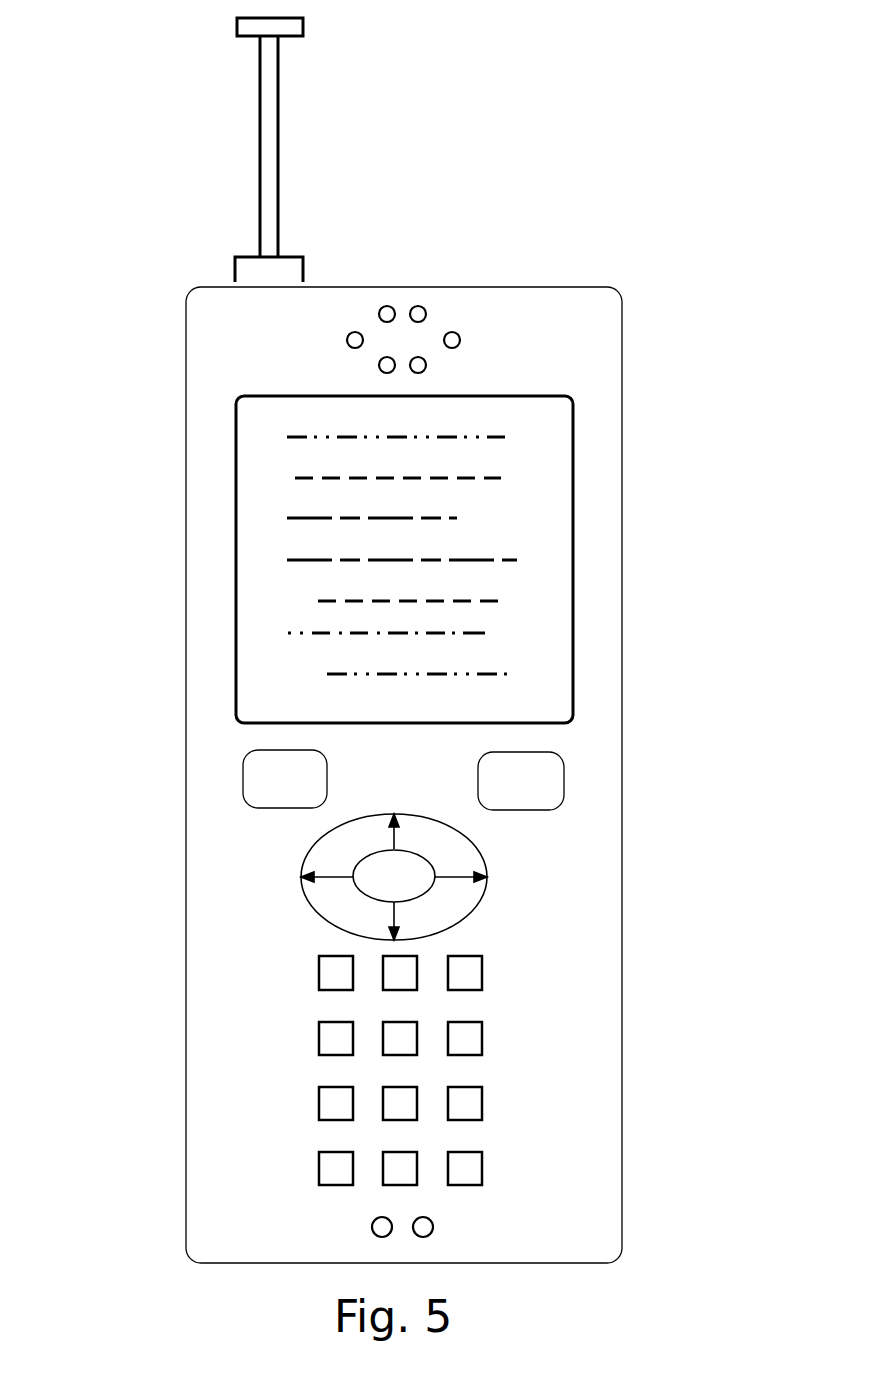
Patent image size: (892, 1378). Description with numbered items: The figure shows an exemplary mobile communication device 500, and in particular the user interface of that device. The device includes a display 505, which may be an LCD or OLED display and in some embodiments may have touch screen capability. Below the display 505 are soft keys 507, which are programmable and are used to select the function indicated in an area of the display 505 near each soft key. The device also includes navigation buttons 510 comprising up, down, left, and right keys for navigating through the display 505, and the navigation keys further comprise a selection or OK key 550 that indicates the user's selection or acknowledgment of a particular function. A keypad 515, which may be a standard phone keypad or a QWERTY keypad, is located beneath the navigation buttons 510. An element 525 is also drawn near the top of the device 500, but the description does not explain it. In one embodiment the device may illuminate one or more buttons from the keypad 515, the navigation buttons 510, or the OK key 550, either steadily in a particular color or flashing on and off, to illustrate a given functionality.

The mobile communication device 500 is at (622, 611).
The display 505 is at (572, 679).
The soft keys 507 is at (256, 753).
The navigation buttons 510 is at (478, 847).
The keypad 515 is at (473, 1055).
The speaker 525 is at (468, 346).
The OK key 550 is at (356, 860).